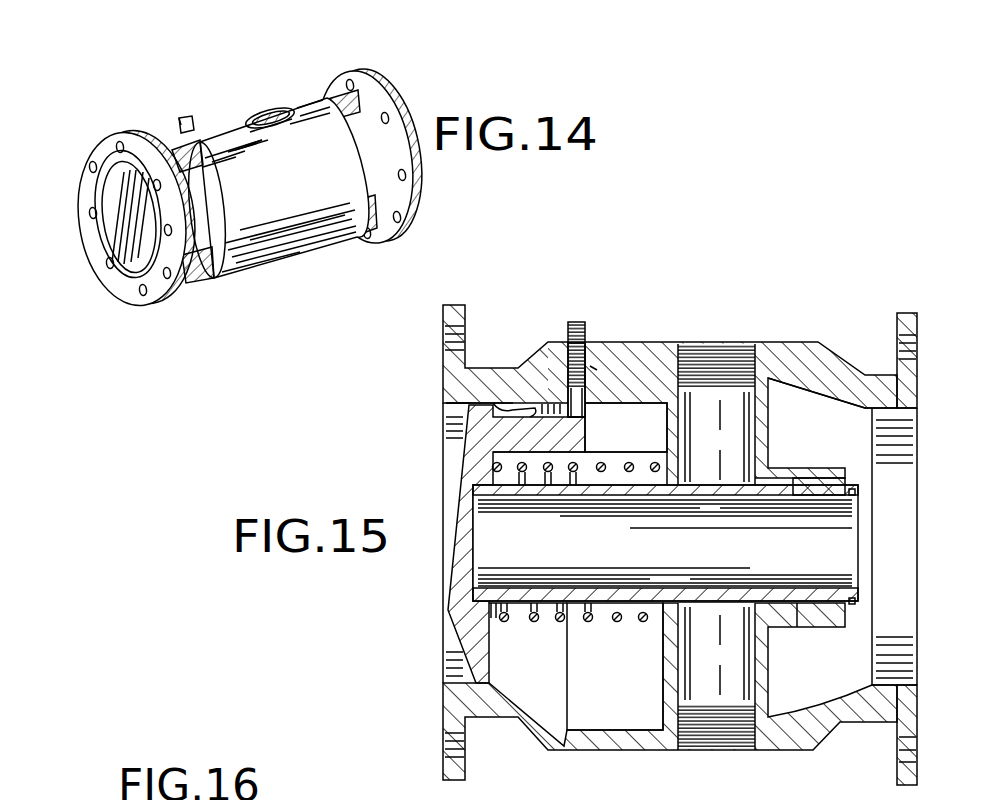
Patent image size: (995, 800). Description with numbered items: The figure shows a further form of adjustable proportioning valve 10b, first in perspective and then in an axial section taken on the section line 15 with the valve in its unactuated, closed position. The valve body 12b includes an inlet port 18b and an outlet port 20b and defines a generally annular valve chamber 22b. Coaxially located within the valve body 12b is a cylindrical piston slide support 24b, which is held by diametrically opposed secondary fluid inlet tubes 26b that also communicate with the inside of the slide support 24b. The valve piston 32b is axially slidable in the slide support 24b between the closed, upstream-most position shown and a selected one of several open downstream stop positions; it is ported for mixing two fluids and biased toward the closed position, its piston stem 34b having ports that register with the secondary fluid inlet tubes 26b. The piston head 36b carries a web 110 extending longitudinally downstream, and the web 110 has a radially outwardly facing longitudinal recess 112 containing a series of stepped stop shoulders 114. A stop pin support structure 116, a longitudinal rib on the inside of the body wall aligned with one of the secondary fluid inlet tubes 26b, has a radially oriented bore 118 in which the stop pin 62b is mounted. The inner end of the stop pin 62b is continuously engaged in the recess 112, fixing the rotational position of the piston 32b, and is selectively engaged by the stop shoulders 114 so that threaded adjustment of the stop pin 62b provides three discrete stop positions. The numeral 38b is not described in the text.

In FIG. 14, the section line 15 is at (229, 87).
In FIG. 14, the adjustable proportioning valve 10b is at (282, 92).
In FIG. 15, the adjustable proportioning valve 10b is at (797, 334).
In FIG. 15, the valve body 12b is at (818, 362).
In FIG. 15, the inlet port 18b is at (446, 404).
In FIG. 15, the outlet port 20b is at (890, 412).
In FIG. 15, the valve chamber 22b is at (576, 666).
In FIG. 15, the piston slide support 24b is at (786, 474).
In FIG. 14, the secondary fluid inlet tubes 26b is at (264, 108).
In FIG. 15, the secondary fluid inlet tubes 26b is at (765, 415).
In FIG. 14, the valve piston 32b is at (118, 221).
In FIG. 15, the valve piston 32b is at (440, 566).
In FIG. 15, the piston stem 34b is at (541, 613).
In FIG. 15, the piston head 36b is at (454, 626).
In FIG. 15, the spring 38b is at (588, 622).
In FIG. 15, the stop pin 62b is at (590, 318).
In FIG. 15, the web 110 is at (573, 438).
In FIG. 15, the longitudinal recess 112 is at (585, 410).
In FIG. 15, the stepped stop shoulders 114 is at (520, 400).
In FIG. 15, the stop pin support structure 116 is at (593, 367).
In FIG. 15, the bore 118 is at (587, 347).